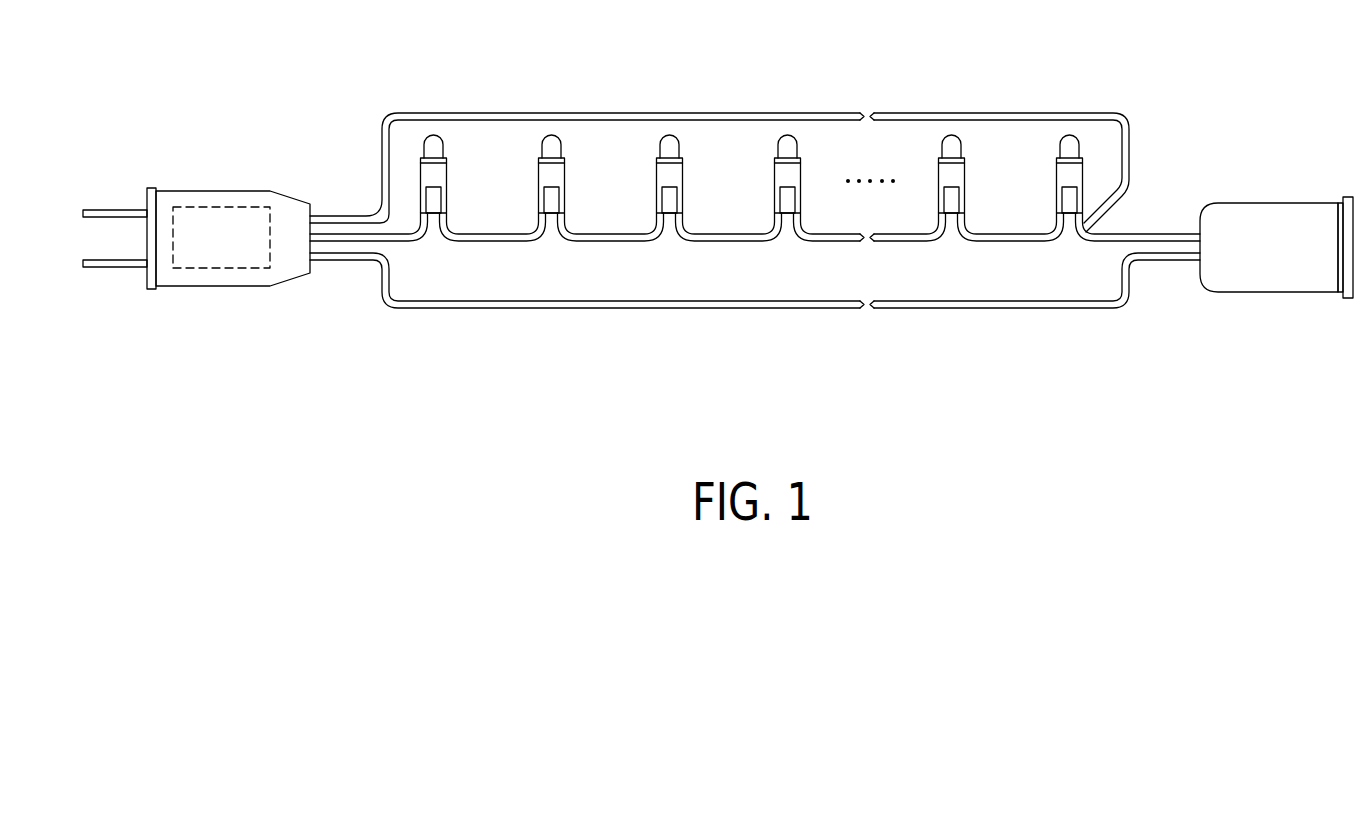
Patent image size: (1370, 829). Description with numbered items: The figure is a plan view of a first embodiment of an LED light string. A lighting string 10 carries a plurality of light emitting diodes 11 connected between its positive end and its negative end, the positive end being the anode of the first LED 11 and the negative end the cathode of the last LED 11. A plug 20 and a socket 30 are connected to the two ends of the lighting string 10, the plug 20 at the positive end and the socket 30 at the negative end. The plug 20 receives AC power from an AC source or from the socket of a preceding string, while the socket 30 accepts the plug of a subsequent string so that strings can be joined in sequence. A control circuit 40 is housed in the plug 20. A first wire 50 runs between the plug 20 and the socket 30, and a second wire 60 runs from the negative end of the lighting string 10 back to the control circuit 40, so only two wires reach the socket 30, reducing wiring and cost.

The lighting string 10 is at (579, 172).
The light emitting diode 11 is at (440, 176).
The plug 20 is at (212, 191).
The socket 30 is at (1268, 203).
The control circuit 40 is at (226, 257).
The first wire 50 is at (469, 308).
The second wire 60 is at (502, 113).